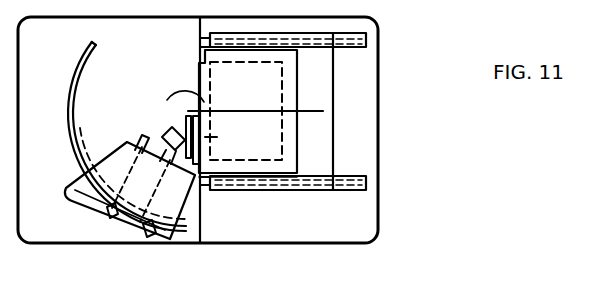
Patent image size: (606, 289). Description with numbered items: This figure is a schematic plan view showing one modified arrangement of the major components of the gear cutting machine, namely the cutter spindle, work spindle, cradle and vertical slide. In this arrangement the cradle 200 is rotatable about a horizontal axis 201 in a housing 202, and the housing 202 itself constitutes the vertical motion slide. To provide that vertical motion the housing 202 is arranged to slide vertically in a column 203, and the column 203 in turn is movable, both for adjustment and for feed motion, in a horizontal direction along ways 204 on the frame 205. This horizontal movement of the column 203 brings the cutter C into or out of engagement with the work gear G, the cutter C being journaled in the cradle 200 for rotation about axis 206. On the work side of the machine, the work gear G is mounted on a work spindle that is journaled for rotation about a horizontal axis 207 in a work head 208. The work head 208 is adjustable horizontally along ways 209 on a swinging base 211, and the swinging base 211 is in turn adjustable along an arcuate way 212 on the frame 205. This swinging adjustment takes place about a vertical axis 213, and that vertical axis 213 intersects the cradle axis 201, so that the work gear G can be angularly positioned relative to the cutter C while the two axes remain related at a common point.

The cradle 200 is at (202, 82).
The horizontal axis 201 is at (327, 112).
The housing 202 is at (287, 80).
The column 203 is at (323, 160).
The ways 204 is at (362, 42).
The frame 205 is at (166, 53).
The cutter axis 206 is at (217, 137).
The horizontal axis of work spindle 207 is at (131, 230).
The work head 208 is at (172, 186).
The ways 209 is at (132, 228).
The swinging base 211 is at (148, 100).
The arcuate way 212 is at (78, 80).
The vertical axis 213 is at (184, 96).
The cutter C is at (188, 113).
The work gear G is at (172, 133).